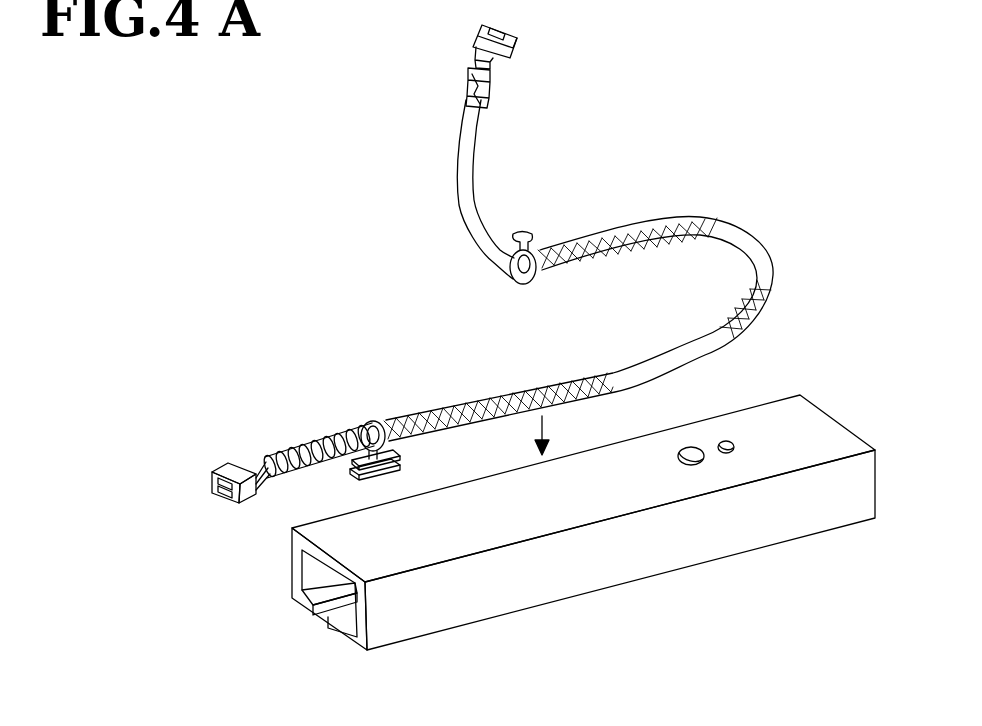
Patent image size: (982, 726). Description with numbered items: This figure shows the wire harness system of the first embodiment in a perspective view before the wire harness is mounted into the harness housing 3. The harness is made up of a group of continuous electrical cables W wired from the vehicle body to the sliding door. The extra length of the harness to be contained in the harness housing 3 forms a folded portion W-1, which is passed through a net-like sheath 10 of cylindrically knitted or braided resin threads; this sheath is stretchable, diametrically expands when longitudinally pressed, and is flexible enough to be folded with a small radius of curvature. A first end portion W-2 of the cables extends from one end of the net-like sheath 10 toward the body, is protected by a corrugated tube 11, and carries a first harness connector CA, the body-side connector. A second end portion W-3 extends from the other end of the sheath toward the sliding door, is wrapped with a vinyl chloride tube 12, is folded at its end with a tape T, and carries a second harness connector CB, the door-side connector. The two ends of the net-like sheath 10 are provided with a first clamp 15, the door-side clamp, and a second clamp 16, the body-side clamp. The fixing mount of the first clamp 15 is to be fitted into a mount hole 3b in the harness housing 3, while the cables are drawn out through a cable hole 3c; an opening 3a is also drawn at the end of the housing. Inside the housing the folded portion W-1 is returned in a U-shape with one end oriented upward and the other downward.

The harness housing 3 is at (710, 543).
The slot / shelf in frame end opening 3a is at (322, 612).
The mount hole 3b is at (728, 440).
The cable hole 3c is at (690, 450).
The electrical cables W is at (533, 313).
The folded portion W-1 is at (621, 328).
The first end portion W-2 is at (290, 480).
The second end portion W-3 is at (484, 152).
The net-like sheath 10 is at (462, 400).
The corrugated tube 11 is at (328, 447).
The vinyl chloride tube 12 is at (465, 195).
The first clamp 15 is at (538, 278).
The second clamp 16 is at (381, 420).
The tape T is at (470, 80).
The first harness connector CA is at (243, 504).
The second harness connector CB is at (520, 47).